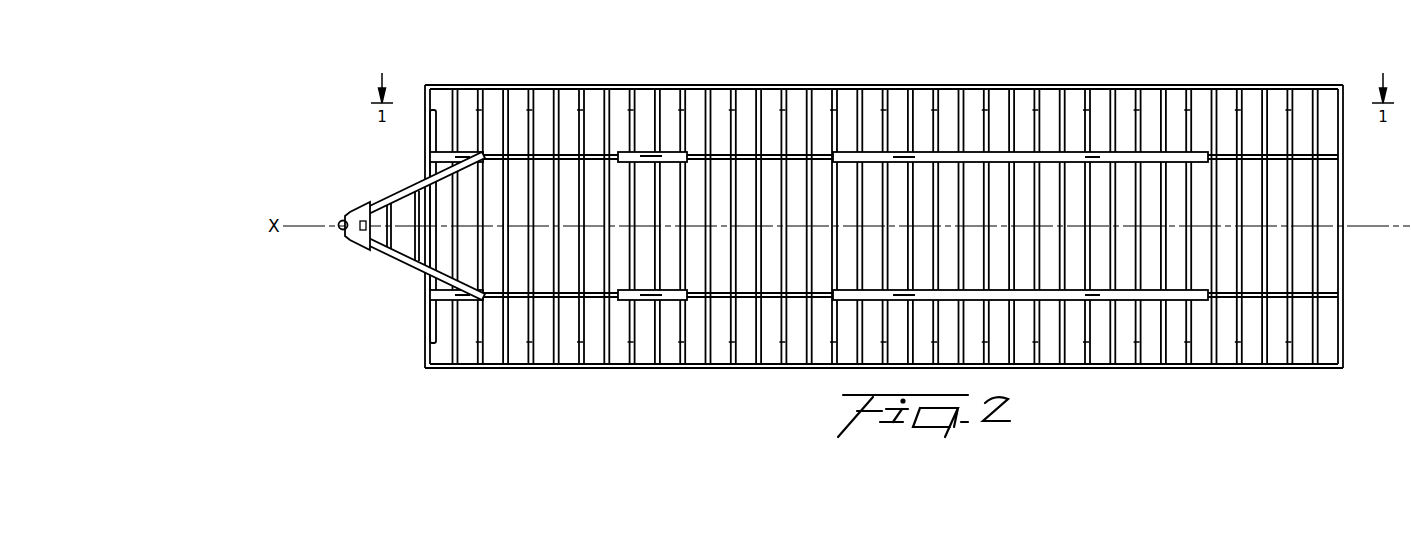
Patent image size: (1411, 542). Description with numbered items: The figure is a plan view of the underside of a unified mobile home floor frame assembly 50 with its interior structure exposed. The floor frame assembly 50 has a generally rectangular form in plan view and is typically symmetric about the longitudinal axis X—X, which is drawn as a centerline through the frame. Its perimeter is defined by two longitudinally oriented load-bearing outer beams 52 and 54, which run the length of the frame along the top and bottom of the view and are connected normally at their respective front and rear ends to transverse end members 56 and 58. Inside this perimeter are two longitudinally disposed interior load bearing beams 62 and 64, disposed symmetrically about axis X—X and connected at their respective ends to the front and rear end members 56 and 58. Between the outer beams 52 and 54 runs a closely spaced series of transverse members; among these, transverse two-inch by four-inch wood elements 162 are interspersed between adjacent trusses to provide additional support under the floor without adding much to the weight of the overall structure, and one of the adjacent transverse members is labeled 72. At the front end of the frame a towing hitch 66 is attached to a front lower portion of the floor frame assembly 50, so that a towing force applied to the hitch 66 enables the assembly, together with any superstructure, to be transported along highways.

The unified mobile home floor frame assembly 50 is at (1112, 70).
The longitudinally oriented load-bearing outer beam 52 is at (693, 87).
The longitudinally oriented load-bearing outer beam 54 is at (747, 369).
The front transverse end member 56 is at (426, 138).
The rear transverse end member 58 is at (1344, 210).
The longitudinally disposed interior load bearing beam 62 is at (1300, 160).
The longitudinally disposed interior load bearing beam 64 is at (1308, 293).
The towing hitch 66 is at (377, 205).
The cross member 72 is at (893, 118).
The transverse wood element 162 is at (860, 104).